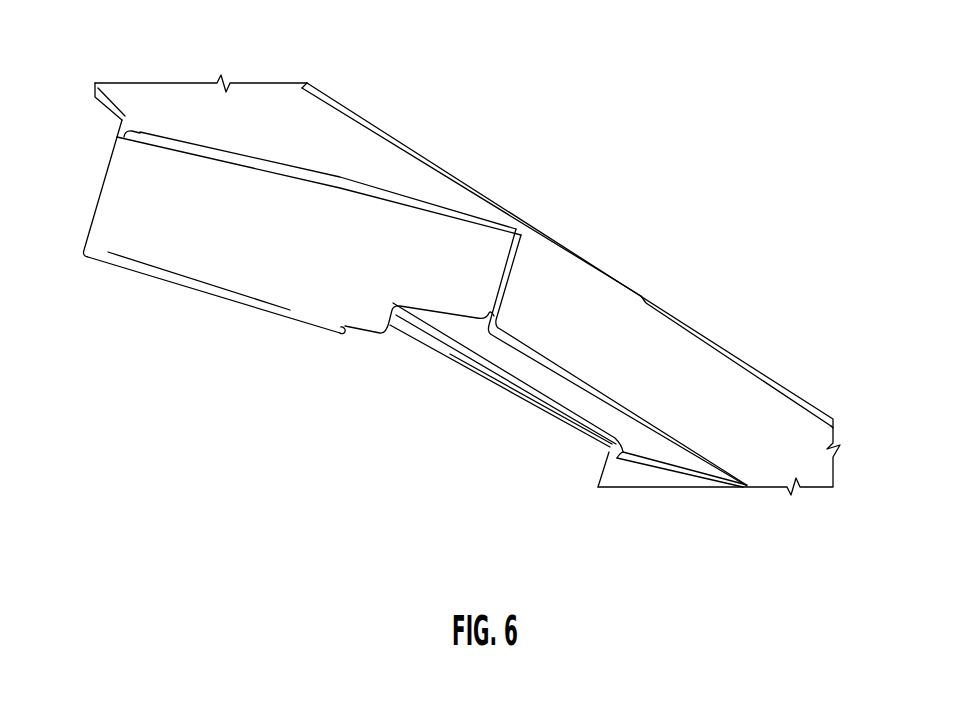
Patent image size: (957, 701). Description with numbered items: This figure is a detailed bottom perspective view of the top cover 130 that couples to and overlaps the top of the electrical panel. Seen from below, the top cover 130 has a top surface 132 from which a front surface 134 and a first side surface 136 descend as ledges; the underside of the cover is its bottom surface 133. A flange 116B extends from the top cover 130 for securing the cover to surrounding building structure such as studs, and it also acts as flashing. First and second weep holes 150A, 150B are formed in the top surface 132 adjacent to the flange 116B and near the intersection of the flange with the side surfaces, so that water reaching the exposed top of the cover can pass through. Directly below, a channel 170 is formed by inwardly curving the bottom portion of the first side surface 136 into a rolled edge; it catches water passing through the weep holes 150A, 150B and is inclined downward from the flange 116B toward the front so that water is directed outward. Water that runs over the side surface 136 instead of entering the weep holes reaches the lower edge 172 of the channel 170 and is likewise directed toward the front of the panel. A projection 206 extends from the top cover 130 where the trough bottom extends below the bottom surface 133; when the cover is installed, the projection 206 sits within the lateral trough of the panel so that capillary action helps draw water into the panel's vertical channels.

The top cover 130 is at (713, 126).
The flange 116B is at (283, 125).
The top surface 132 is at (481, 200).
The bottom surface 133 is at (512, 358).
The front surface 134 is at (734, 425).
The first side surface 136 is at (240, 257).
The first weep hole 150A is at (130, 124).
The second weep hole 150B is at (623, 458).
The channel 170 is at (661, 474).
The lower edge 172 is at (299, 328).
The projection 206 is at (537, 418).